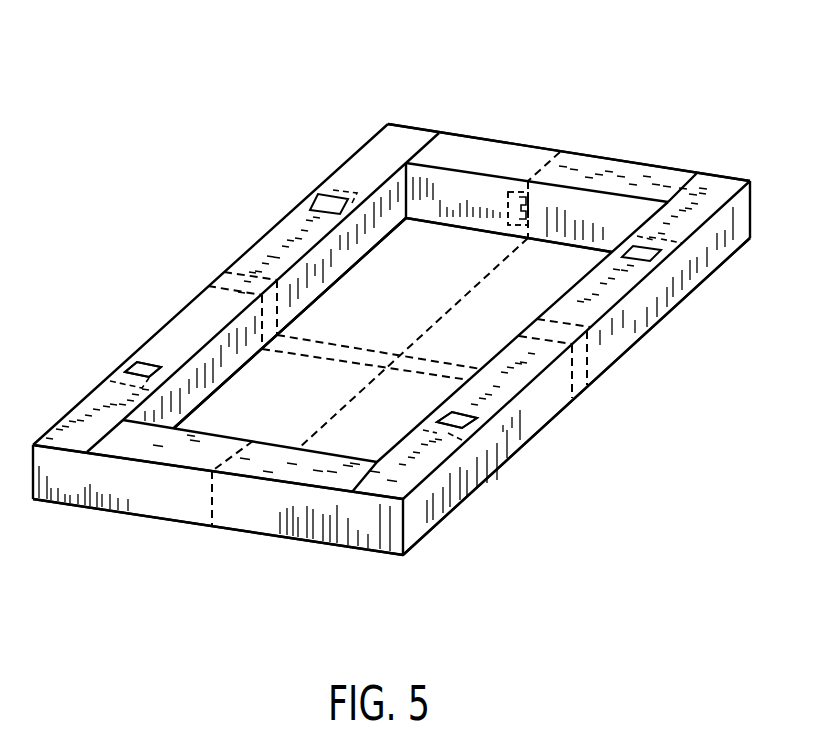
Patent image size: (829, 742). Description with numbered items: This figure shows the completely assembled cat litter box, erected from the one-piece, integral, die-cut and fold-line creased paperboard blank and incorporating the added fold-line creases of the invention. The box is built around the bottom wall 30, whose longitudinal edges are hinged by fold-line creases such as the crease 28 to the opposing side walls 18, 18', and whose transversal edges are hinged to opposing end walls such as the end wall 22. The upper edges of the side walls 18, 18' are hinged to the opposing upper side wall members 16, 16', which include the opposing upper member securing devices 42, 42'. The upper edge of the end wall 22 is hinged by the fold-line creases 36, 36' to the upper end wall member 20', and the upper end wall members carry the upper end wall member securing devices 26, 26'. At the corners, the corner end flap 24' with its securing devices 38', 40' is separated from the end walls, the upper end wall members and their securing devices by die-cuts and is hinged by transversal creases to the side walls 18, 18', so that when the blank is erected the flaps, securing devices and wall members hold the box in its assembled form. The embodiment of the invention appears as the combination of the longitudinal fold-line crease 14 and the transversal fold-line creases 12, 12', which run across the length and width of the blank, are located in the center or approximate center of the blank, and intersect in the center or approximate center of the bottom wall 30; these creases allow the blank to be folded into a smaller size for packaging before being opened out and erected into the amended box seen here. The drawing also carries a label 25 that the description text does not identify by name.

The transversal fold-line crease 12 is at (453, 368).
The transversal fold-line crease 12' is at (472, 340).
The longitudinal fold-line crease 14 is at (332, 412).
The upper side wall member 16 is at (551, 336).
The upper side wall member 16' is at (236, 311).
The side wall 18 is at (576, 381).
The side wall 18' is at (275, 305).
The upper end wall member 20' is at (569, 130).
The end wall 22 is at (113, 473).
The corner end flap 24' is at (509, 154).
The top surface 25 is at (197, 455).
The upper end wall member securing device 26 is at (513, 472).
The upper end wall member securing device 26' is at (90, 357).
The fold-line crease 28 is at (205, 400).
The bottom wall 30 is at (531, 309).
The fold-line crease 36 is at (218, 524).
The fold-line crease 36' is at (569, 128).
The securing device 38' is at (469, 232).
The securing device 40' is at (488, 232).
The upper member securing device 42 is at (532, 472).
The upper member securing device 42' is at (111, 351).